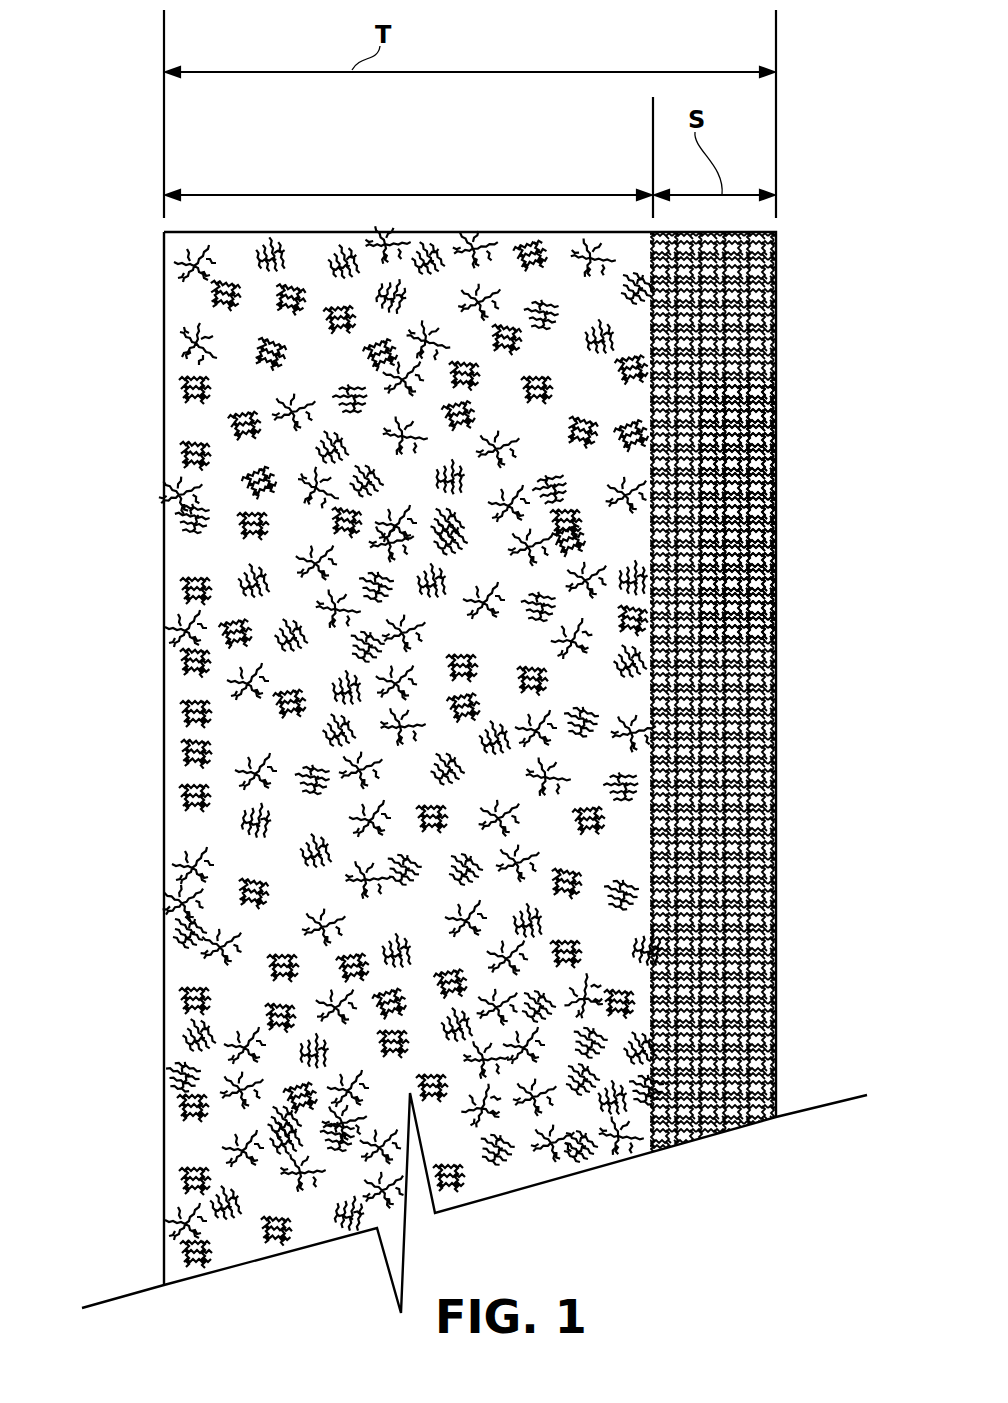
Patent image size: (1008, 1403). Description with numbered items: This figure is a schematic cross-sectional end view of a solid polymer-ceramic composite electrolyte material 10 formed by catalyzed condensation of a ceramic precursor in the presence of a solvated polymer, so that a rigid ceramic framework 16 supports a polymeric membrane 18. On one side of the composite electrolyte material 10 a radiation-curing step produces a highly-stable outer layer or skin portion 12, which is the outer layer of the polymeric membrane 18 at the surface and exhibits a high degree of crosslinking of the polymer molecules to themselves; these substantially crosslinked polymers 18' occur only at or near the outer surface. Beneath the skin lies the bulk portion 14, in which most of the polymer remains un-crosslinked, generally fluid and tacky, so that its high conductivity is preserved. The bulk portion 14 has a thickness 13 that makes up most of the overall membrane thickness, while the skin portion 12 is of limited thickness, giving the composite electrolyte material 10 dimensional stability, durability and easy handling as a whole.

The polymer-ceramic composite electrolyte material 10 is at (797, 331).
The outer layer or skin portion 12 is at (784, 878).
The thickness of the bulk of the molecular composite 13 is at (332, 195).
The bulk portion 14 is at (286, 585).
The rigid ceramic framework 16 is at (222, 492).
The polymeric membrane 18 is at (224, 1079).
The substantially crosslinked polymers 18' is at (794, 510).